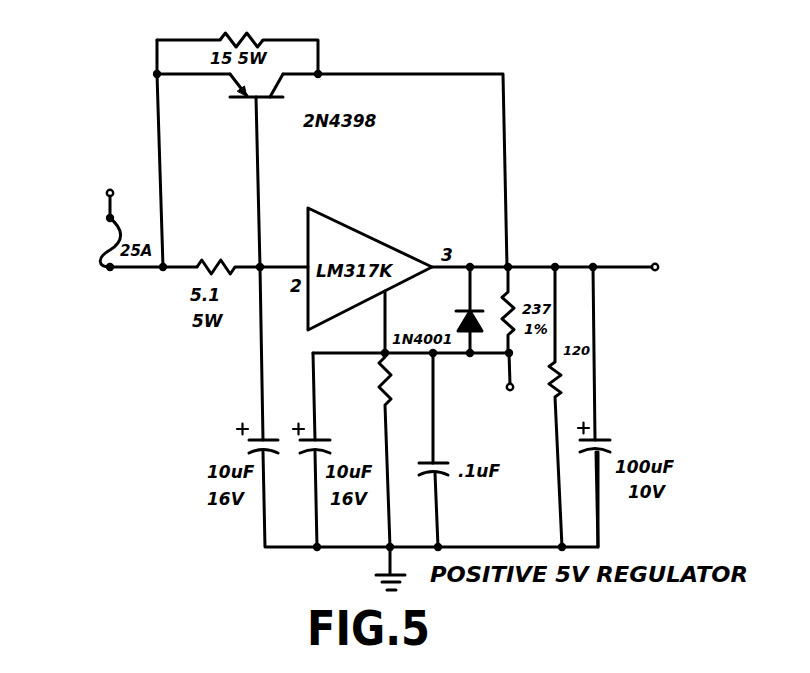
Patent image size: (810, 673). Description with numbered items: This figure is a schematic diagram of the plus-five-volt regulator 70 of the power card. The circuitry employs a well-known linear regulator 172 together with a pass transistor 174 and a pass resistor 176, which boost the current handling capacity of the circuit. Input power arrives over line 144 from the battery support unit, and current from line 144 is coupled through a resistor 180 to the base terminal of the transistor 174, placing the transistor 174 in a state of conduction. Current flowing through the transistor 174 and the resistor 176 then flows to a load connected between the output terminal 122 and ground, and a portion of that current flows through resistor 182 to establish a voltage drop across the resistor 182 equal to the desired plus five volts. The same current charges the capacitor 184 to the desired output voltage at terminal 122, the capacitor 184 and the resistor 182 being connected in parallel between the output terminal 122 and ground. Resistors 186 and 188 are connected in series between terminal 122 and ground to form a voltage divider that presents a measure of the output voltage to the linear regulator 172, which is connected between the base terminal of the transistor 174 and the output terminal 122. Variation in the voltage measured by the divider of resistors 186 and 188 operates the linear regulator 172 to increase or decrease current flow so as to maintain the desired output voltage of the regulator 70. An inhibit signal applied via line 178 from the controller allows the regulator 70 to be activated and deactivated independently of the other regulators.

The regulator 70 is at (640, 333).
The output terminal 122 is at (657, 262).
The line 144 is at (108, 206).
The linear regulator 172 is at (366, 232).
The pass transistor 174 is at (240, 103).
The pass resistor 176 is at (238, 36).
The line 178 is at (507, 367).
The resistor 180 is at (222, 238).
The resistor 182 is at (562, 378).
The capacitor 184 is at (598, 441).
The resistor 186 is at (512, 294).
The resistor 188 is at (392, 383).